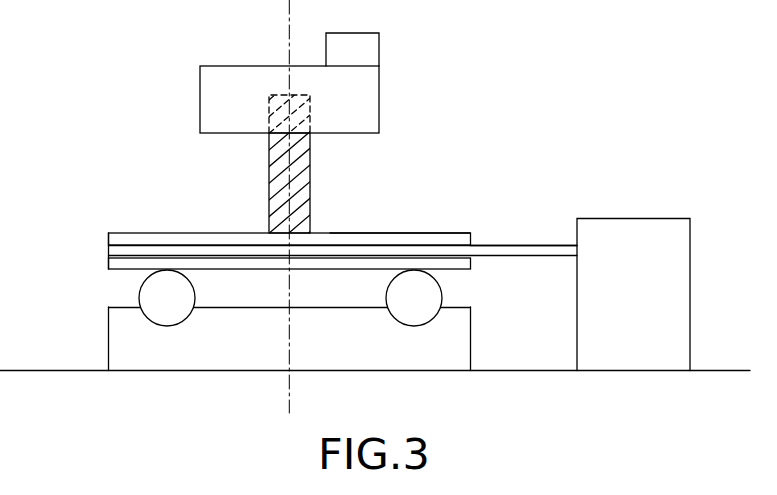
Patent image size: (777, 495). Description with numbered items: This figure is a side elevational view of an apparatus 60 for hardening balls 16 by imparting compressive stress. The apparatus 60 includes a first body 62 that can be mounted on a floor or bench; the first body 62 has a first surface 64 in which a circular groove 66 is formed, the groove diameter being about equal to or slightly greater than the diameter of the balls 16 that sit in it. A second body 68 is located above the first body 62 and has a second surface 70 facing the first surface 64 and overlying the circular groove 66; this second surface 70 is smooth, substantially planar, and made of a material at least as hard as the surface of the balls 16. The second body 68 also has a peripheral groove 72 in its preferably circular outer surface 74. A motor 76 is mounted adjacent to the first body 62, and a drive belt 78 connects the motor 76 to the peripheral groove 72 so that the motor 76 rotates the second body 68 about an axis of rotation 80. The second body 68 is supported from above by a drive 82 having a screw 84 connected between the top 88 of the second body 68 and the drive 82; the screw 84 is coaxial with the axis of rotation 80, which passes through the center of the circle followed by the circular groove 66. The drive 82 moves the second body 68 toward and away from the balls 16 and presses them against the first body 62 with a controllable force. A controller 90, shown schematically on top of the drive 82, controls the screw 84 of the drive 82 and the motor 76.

The balls 16 is at (432, 292).
The apparatus 60 is at (446, 122).
The first body 62 is at (123, 343).
The first surface 64 is at (118, 308).
The circular groove 66 is at (183, 309).
The second body 68 is at (109, 232).
The second surface 70 is at (123, 270).
The peripheral groove 72 is at (108, 250).
The outer surface 74 is at (472, 240).
The motor 76 is at (678, 280).
The drive belt 78 is at (555, 246).
The axis of rotation 80 is at (290, 397).
The drive 82 is at (368, 93).
The screw 84 is at (306, 166).
The top 88 is at (403, 234).
The controller 90 is at (368, 44).